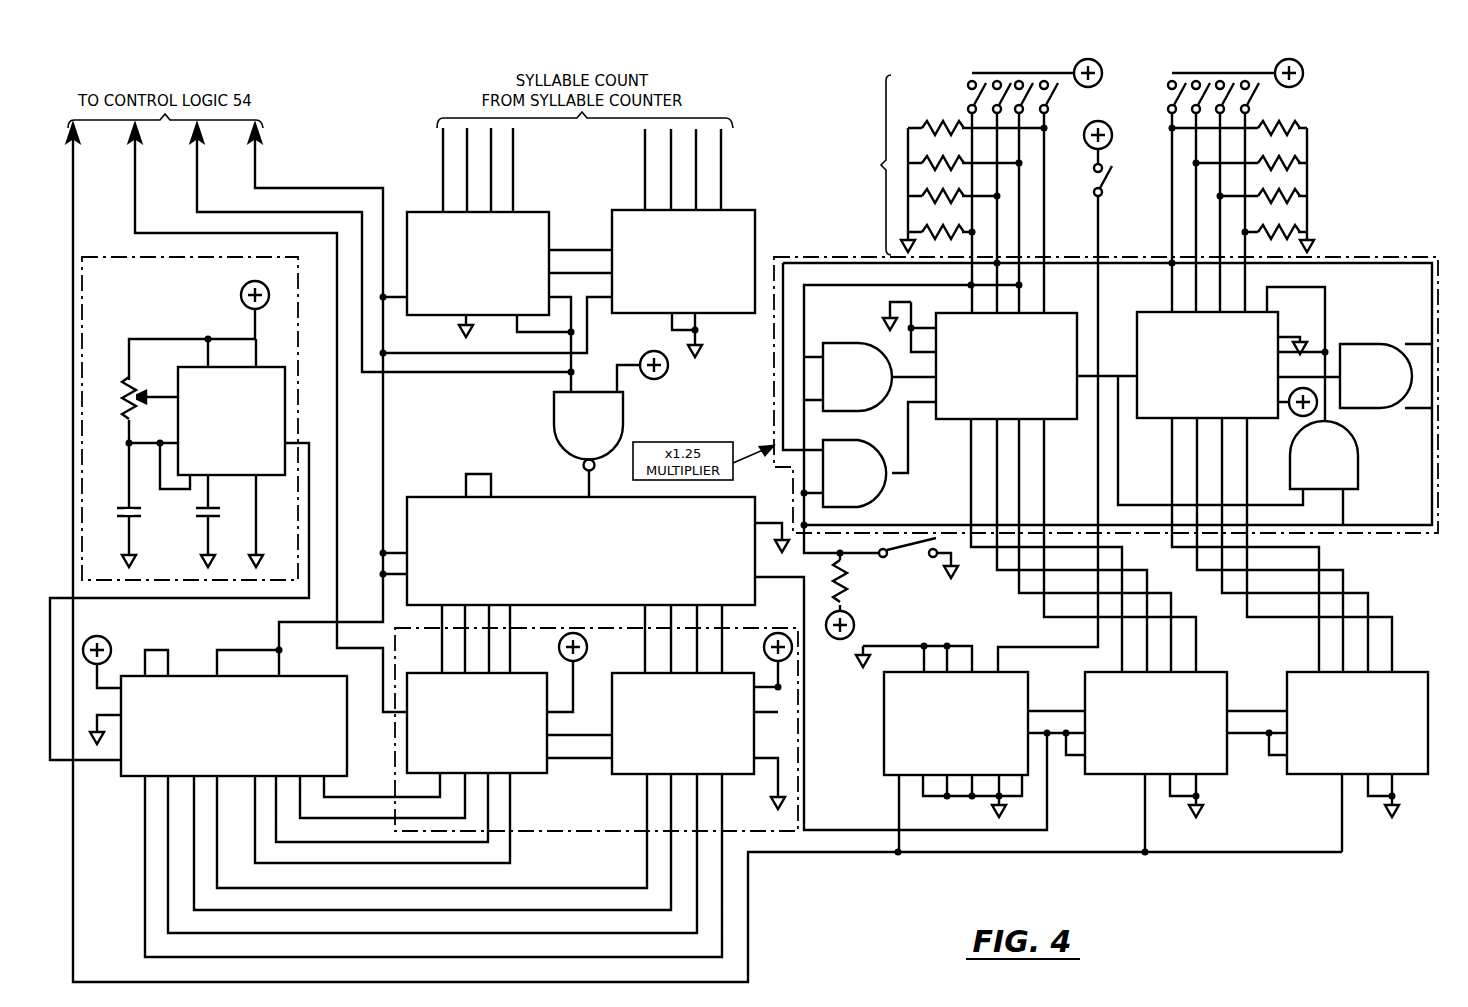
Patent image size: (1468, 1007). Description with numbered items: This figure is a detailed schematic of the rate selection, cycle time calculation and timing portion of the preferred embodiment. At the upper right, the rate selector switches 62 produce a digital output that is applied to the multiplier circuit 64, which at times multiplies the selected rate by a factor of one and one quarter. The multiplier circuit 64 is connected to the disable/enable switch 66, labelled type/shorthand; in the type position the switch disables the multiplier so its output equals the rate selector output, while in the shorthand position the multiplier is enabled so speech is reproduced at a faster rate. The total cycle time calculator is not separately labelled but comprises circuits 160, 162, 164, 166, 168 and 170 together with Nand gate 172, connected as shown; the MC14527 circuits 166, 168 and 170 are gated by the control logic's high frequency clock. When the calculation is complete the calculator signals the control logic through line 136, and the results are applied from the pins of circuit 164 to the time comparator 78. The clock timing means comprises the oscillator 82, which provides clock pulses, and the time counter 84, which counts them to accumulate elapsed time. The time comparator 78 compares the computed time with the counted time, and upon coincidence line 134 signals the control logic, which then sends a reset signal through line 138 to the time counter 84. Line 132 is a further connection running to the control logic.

The line to control logic 132 is at (75, 171).
The coincidence signal line 134 is at (137, 171).
The computation complete signal line 136 is at (199, 171).
The reset signal line 138 is at (257, 171).
The oscillator 82 is at (183, 305).
The time counter 84 is at (333, 710).
The time comparator 78 is at (507, 783).
The MC14522 circuit 162 is at (540, 212).
The MC14522 circuit 160 is at (742, 210).
The MC14518 circuit 164 is at (548, 496).
The Nand gate 172 is at (627, 428).
The rate selector switches 62 is at (884, 163).
The multiplier circuit 64 is at (914, 500).
The disable/enable switch 66 is at (884, 558).
The MC14527 circuit 166 is at (1029, 676).
The MC14527 circuit 168 is at (1226, 676).
The MC14527 circuit 170 is at (1311, 775).